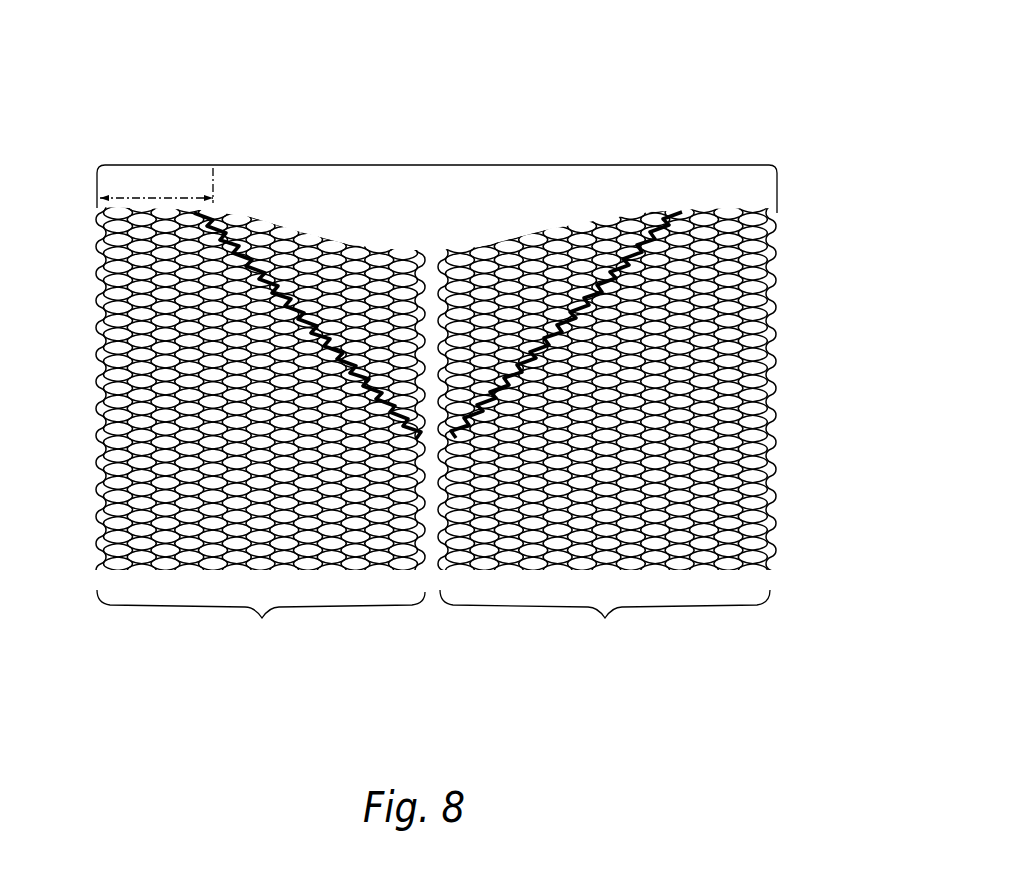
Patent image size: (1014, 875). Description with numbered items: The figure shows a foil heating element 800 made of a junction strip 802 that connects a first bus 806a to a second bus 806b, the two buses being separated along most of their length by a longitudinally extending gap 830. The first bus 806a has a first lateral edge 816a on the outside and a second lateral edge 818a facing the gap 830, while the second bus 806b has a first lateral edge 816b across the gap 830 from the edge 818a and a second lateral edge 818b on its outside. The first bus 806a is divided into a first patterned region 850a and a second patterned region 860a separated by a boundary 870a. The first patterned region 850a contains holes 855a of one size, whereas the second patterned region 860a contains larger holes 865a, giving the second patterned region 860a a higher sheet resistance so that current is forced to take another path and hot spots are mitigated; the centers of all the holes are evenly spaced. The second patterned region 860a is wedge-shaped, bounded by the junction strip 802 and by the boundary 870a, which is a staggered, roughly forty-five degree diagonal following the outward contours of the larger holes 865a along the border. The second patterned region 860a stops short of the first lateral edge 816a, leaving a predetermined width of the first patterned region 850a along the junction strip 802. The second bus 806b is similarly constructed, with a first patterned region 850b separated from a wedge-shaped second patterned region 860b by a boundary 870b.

The heating element 800 is at (76, 34).
The junction strip 802 is at (197, 182).
The first bus 806a is at (261, 624).
The second bus 806b is at (605, 624).
The first lateral edge 816a is at (98, 536).
The first lateral edge 816b is at (438, 567).
The second lateral edge 818a is at (425, 565).
The second lateral edge 818b is at (776, 523).
The gap 830 is at (432, 255).
The first patterned region 850a is at (95, 468).
The first patterned region 850b is at (780, 317).
The holes 855a is at (97, 406).
The second patterned region 860a is at (322, 213).
The second patterned region 860b is at (621, 195).
The holes 865a is at (360, 240).
The boundary 870a is at (270, 262).
The boundary 870b is at (548, 330).